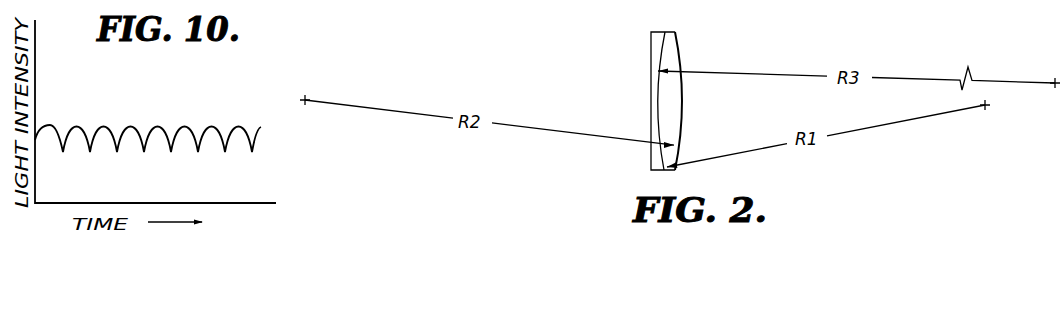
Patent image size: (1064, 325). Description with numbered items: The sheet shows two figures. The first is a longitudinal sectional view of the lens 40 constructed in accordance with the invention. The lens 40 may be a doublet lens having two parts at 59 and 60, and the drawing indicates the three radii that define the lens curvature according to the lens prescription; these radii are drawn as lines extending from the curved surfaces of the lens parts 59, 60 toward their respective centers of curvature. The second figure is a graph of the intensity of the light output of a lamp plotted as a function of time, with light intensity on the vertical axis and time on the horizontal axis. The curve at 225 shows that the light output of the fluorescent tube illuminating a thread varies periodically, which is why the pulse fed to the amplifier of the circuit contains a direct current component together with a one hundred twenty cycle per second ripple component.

In FIG. 2, the lens 40 is at (660, 88).
In FIG. 2, the lens part 59 is at (657, 53).
In FIG. 2, the lens part 60 is at (673, 52).
In FIG. 10, the light output variation 225 is at (160, 125).